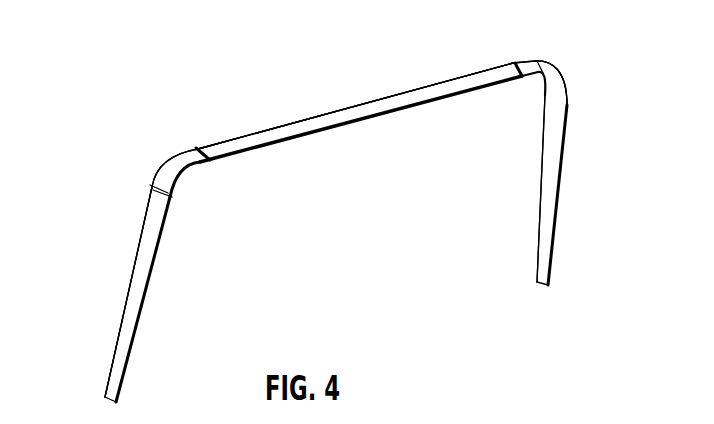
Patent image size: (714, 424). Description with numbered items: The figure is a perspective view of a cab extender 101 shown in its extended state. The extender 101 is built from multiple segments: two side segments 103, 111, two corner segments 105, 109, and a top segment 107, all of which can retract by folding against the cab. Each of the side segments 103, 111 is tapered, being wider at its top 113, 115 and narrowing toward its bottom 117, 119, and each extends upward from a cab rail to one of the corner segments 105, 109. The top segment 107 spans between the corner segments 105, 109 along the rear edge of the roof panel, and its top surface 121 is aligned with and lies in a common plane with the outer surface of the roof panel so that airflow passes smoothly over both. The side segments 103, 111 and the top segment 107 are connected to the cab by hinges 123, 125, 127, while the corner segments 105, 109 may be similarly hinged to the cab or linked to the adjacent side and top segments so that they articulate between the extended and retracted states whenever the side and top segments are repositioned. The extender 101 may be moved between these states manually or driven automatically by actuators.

The extender 101 is at (217, 123).
The side segment 103 is at (151, 271).
The corner segment 105 is at (183, 170).
The top segment 107 is at (333, 118).
The corner segment 109 is at (538, 62).
The side segment 111 is at (542, 200).
The top of side segment 113 is at (152, 187).
The top of side segment 115 is at (568, 88).
The bottom of side segment 117 is at (108, 400).
The bottom of side segment 119 is at (542, 286).
The top surface 121 is at (387, 100).
The hinge 123 is at (127, 287).
The hinge 125 is at (305, 118).
The hinge 127 is at (543, 125).